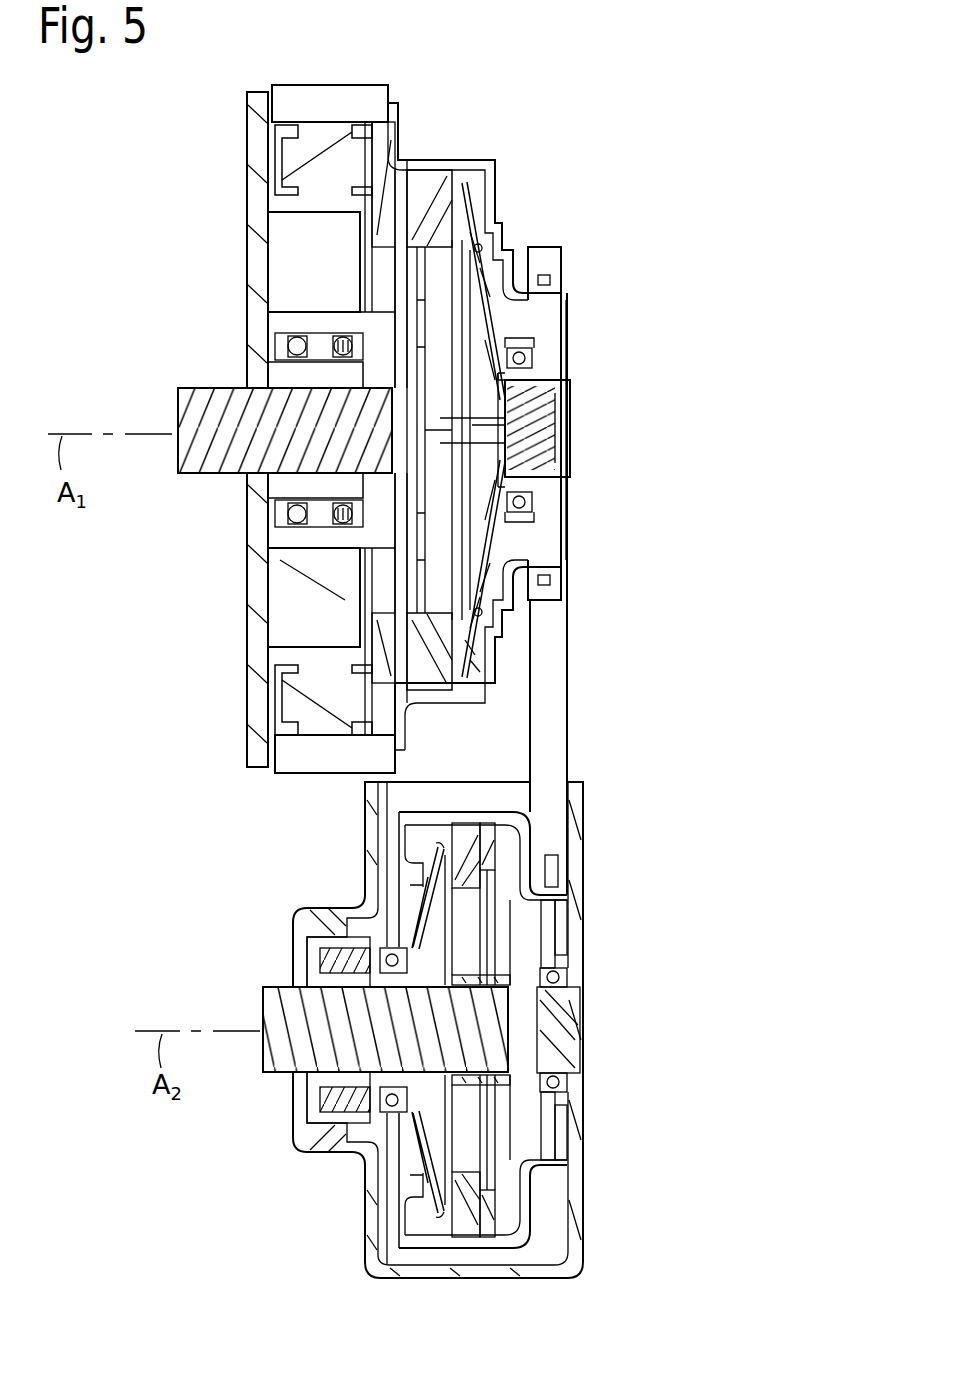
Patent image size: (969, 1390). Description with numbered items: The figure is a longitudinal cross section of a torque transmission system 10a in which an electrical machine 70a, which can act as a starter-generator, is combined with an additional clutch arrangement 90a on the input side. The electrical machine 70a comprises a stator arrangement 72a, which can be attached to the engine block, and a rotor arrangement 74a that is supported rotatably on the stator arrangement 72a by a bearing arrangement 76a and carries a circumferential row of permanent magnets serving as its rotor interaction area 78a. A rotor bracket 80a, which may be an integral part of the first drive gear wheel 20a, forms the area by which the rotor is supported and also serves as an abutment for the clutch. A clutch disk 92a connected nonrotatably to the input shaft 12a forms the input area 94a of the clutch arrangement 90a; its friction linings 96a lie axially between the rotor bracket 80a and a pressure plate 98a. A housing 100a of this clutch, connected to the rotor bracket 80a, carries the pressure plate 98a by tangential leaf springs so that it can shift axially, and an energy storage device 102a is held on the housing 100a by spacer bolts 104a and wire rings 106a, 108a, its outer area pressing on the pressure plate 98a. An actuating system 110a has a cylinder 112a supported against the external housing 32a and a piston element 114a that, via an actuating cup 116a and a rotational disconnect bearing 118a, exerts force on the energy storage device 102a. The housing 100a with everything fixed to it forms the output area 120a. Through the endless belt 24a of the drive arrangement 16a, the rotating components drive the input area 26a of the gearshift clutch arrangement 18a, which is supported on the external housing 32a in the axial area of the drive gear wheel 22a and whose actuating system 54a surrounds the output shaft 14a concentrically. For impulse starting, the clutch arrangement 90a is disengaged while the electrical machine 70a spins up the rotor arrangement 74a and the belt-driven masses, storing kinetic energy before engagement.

The torque transmission system 10a is at (687, 152).
The input shaft 12a is at (178, 393).
The output shaft 14a is at (265, 988).
The drive arrangement 16a is at (643, 603).
The clutch arrangement 18a is at (270, 888).
The first drive gear wheel 20a is at (560, 578).
The drive gear wheel 22a is at (555, 940).
The endless belt 24a is at (570, 736).
The input area 26a is at (545, 1256).
The external housing 32a is at (584, 1192).
The actuating system 54a is at (297, 1156).
The electrical machine 70a is at (262, 72).
The stator arrangement 72a is at (318, 193).
The rotor arrangement 74a is at (393, 98).
The bearing arrangement 76a is at (275, 352).
The rotor interaction area 78a is at (325, 100).
The rotor bracket 80a is at (430, 172).
The clutch arrangement 90a is at (535, 532).
The clutch disk 92a is at (417, 518).
The input area 94a is at (395, 503).
The friction linings 96a is at (417, 628).
The pressure plate 98a is at (470, 188).
The housing 100a is at (485, 240).
The energy storage device 102a is at (485, 288).
The spacer bolts 104a is at (543, 390).
The wire ring 106a is at (488, 632).
The wire ring 108a is at (488, 652).
The actuating system 110a is at (640, 394).
The cylinder 112a is at (572, 448).
The piston element 114a is at (455, 433).
The actuating cup 116a is at (522, 506).
The rotational disconnect bearing 118a is at (515, 343).
The output area 120a is at (605, 227).